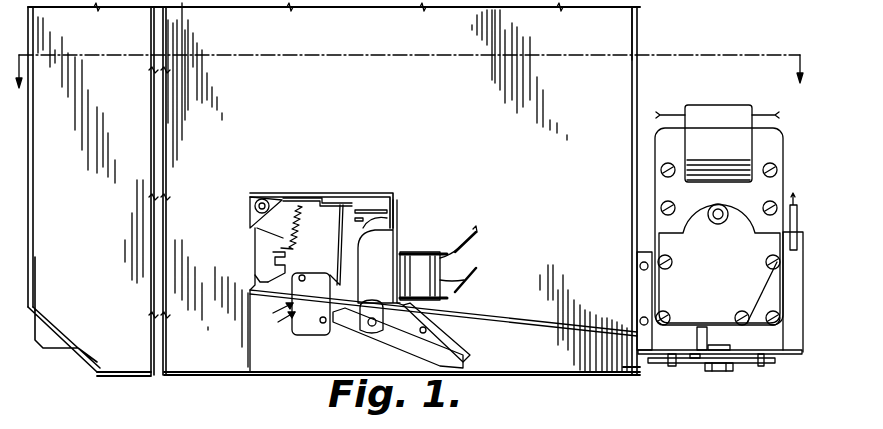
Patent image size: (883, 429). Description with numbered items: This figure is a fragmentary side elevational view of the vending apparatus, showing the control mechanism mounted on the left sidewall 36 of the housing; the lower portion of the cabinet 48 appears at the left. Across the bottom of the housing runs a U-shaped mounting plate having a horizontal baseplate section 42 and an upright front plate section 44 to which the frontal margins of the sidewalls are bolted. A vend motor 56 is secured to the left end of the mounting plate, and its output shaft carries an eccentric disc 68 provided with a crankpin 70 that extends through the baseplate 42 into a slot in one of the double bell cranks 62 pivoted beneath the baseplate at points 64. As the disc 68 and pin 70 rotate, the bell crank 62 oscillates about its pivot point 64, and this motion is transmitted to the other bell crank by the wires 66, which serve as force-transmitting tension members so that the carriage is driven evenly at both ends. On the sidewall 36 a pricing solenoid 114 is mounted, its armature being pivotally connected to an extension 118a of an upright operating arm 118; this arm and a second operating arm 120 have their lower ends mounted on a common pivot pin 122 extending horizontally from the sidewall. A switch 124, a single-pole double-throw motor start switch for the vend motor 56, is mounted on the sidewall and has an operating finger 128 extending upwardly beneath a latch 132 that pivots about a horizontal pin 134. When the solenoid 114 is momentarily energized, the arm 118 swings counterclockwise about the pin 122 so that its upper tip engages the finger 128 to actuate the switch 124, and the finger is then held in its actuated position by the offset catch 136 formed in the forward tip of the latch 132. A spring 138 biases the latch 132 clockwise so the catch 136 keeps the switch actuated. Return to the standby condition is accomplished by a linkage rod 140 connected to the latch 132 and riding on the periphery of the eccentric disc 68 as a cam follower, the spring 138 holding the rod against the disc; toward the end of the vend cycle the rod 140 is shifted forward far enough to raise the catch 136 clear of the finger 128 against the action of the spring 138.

The left sidewall 36 is at (622, 31).
The baseplate section 42 is at (788, 353).
The front plate section 44 is at (641, 288).
The cabinet 48 is at (422, 216).
The vend motor 56 is at (772, 182).
The double bell crank 62 is at (757, 365).
The pivot point 64 is at (730, 352).
The wires 66 is at (672, 362).
The eccentric disc 68 is at (704, 330).
The crankpin 70 is at (694, 360).
The solenoid 114 is at (462, 260).
The operating arm 118 is at (392, 221).
The extension 118a is at (445, 345).
The operating arm 120 is at (397, 205).
The pivot pin 122 is at (365, 336).
The switch 124 is at (300, 338).
The operating finger 128 is at (340, 229).
The latch 132 is at (313, 194).
The horizontal pin 134 is at (250, 210).
The offset catch 136 is at (325, 198).
The spring 138 is at (268, 243).
The linkage rod 140 is at (540, 325).